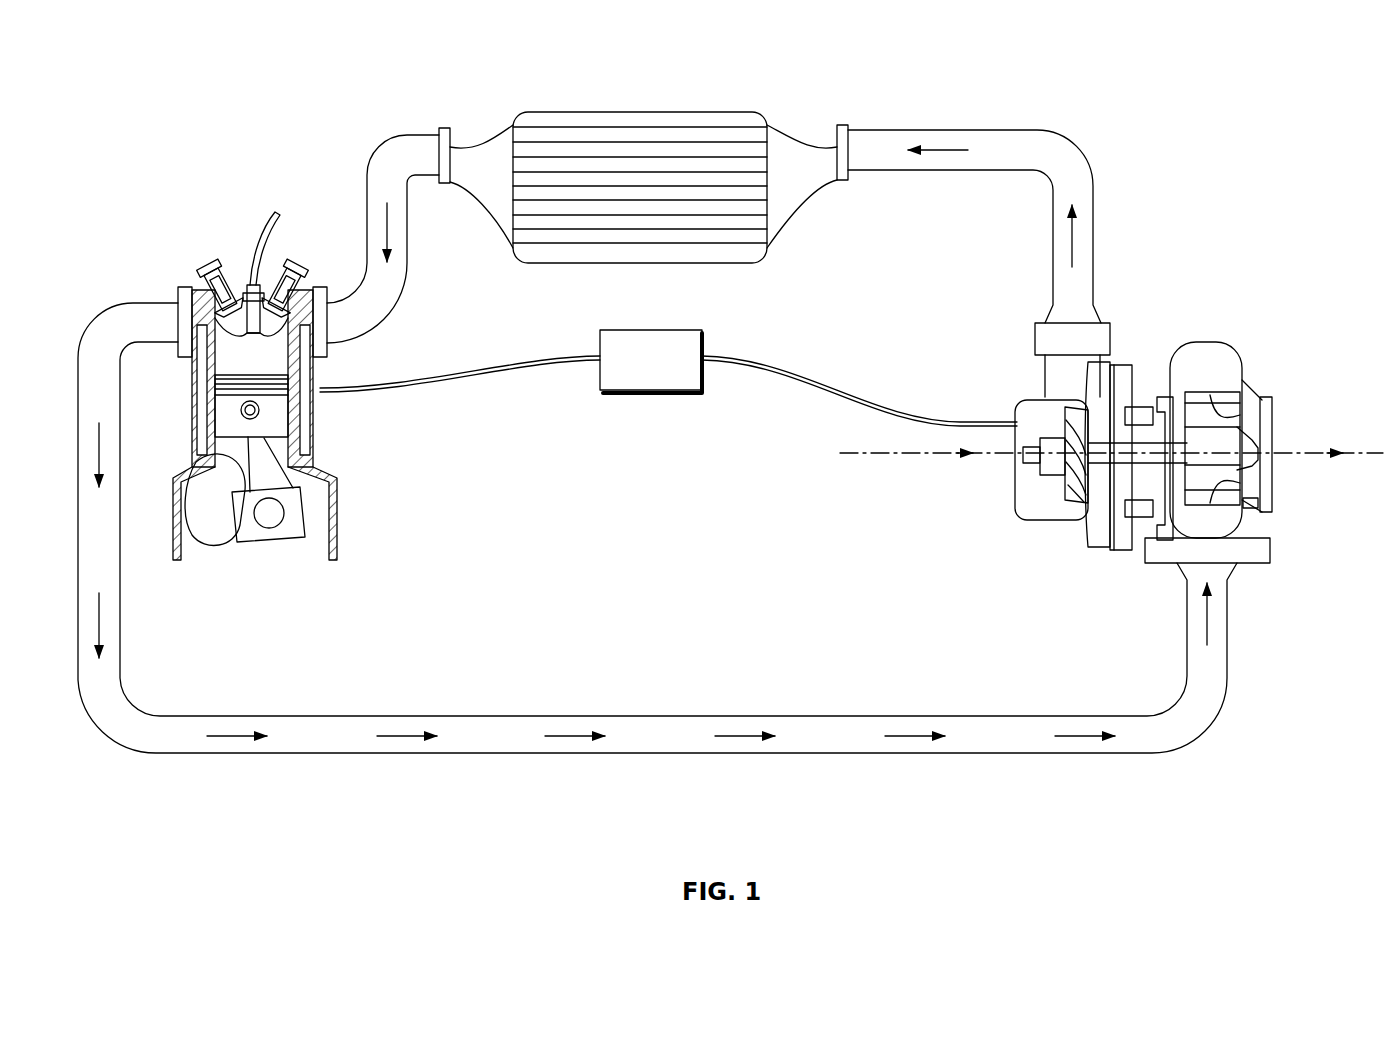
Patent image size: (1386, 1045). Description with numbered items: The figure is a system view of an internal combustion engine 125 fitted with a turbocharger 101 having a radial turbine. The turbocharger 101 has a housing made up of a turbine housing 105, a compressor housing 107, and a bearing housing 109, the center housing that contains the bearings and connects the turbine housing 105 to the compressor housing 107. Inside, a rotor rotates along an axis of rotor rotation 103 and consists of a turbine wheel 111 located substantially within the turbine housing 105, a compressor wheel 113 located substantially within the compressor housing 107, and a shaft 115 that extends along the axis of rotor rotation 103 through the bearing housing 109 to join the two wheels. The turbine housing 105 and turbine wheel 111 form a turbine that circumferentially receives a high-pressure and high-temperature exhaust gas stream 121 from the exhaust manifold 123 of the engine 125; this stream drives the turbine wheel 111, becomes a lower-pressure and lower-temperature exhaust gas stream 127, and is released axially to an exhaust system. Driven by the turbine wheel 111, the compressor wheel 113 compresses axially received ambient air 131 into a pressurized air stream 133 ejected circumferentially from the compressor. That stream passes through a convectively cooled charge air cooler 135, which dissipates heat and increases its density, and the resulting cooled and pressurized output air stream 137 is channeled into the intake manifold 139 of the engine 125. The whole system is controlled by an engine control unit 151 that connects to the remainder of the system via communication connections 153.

The turbocharger 101 is at (1120, 365).
The axis of rotor rotation 103 is at (1380, 452).
The turbine housing 105 is at (1227, 375).
The compressor housing 107 is at (1025, 400).
The bearing housing 109 is at (1137, 415).
The turbine wheel 111 is at (1200, 438).
The compressor wheel 113 is at (1060, 472).
The shaft 115 is at (1152, 462).
The high-pressure and high-temperature exhaust gas stream 121 is at (742, 750).
The exhaust manifold 123 is at (217, 288).
The internal combustion engine 125 is at (272, 412).
The lower-pressure and lower-temperature exhaust gas stream 127 is at (1303, 452).
The ambient air 131 is at (905, 456).
The pressurized air stream 133 is at (940, 148).
The charge air cooler 135 is at (645, 140).
The cooled and pressurized output air stream 137 is at (385, 228).
The intake manifold 139 is at (303, 385).
The engine control unit 151 is at (653, 330).
The communication connections 153 is at (760, 372).